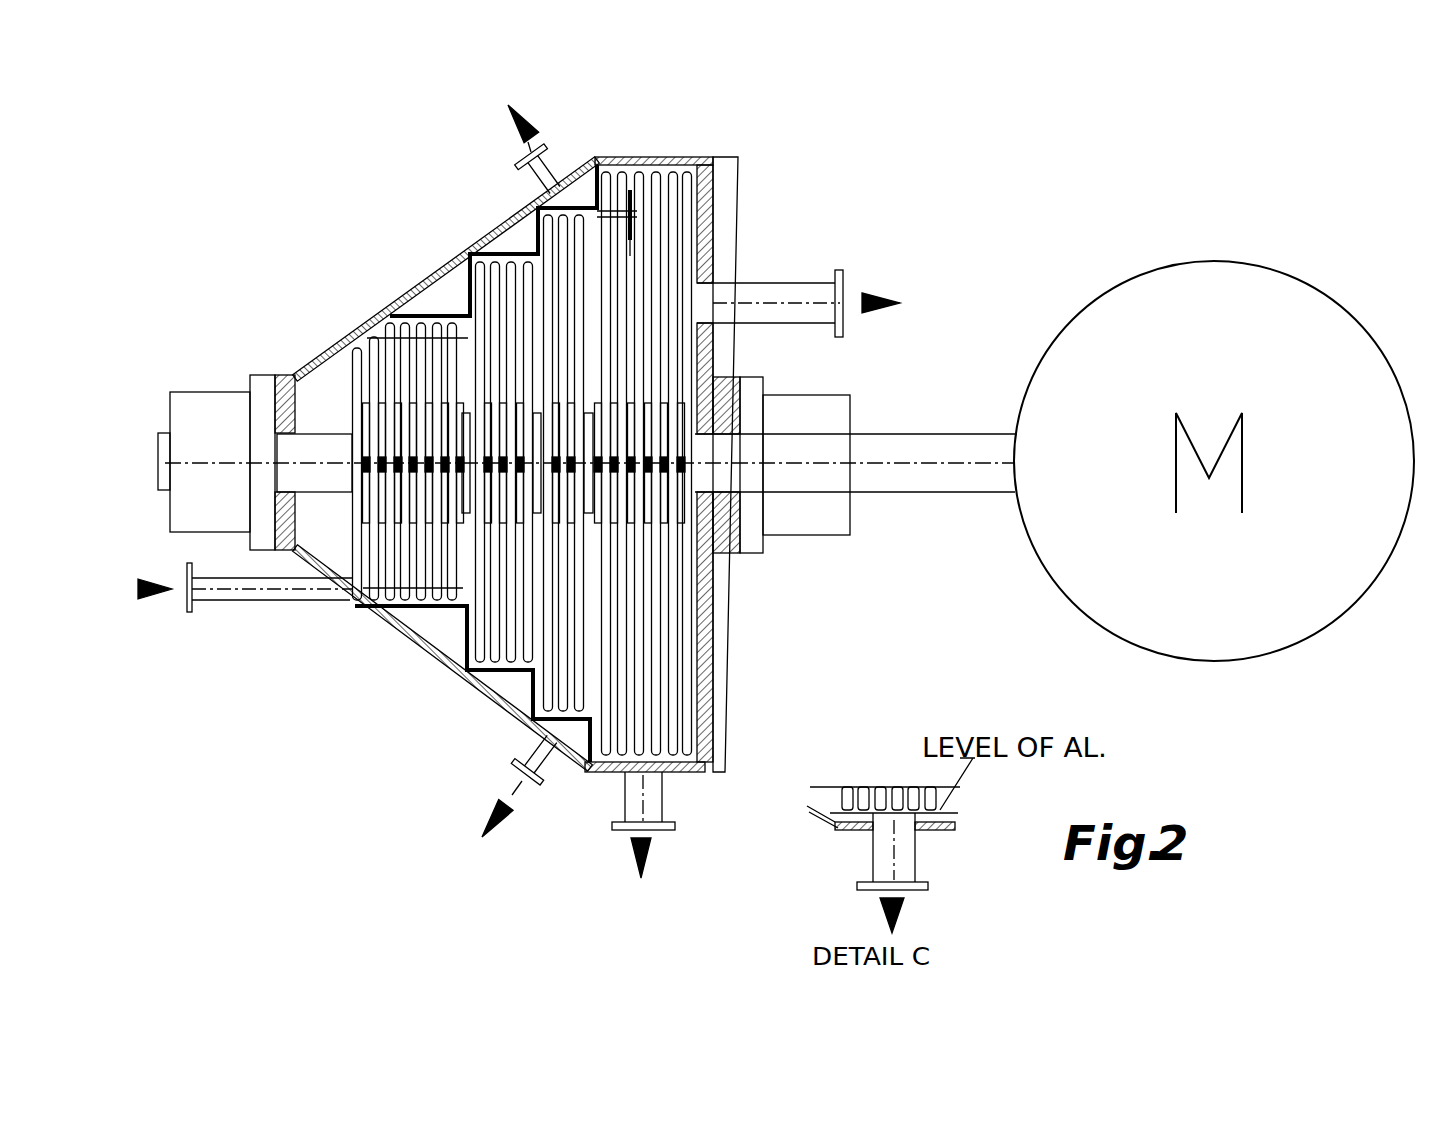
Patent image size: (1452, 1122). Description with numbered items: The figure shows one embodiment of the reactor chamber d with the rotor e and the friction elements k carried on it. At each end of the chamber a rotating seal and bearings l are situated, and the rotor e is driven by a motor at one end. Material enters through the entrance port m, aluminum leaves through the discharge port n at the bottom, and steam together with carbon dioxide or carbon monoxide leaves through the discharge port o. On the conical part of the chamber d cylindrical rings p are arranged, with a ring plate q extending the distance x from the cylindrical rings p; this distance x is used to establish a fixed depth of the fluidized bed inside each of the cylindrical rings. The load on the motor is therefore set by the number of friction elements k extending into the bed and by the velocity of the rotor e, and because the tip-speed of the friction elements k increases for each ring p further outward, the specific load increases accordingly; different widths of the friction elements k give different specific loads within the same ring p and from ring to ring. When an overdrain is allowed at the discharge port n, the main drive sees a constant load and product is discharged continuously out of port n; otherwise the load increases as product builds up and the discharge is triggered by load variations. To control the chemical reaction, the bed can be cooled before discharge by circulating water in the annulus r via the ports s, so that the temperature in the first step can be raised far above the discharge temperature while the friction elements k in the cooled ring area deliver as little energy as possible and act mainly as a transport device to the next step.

The friction elements k is at (641, 182).
The reactor chamber d is at (422, 648).
The rotating seal and bearings l is at (185, 400).
The rotor e is at (900, 494).
The cylindrical rings p is at (415, 316).
The ring plate q is at (468, 272).
The distance x is at (626, 227).
The annulus r is at (578, 190).
The ports s is at (519, 786).
The discharge port for the steam and CO2 or CO o is at (847, 283).
The discharge port for the aluminum n is at (665, 832).
The entrance port for the material m is at (187, 605).